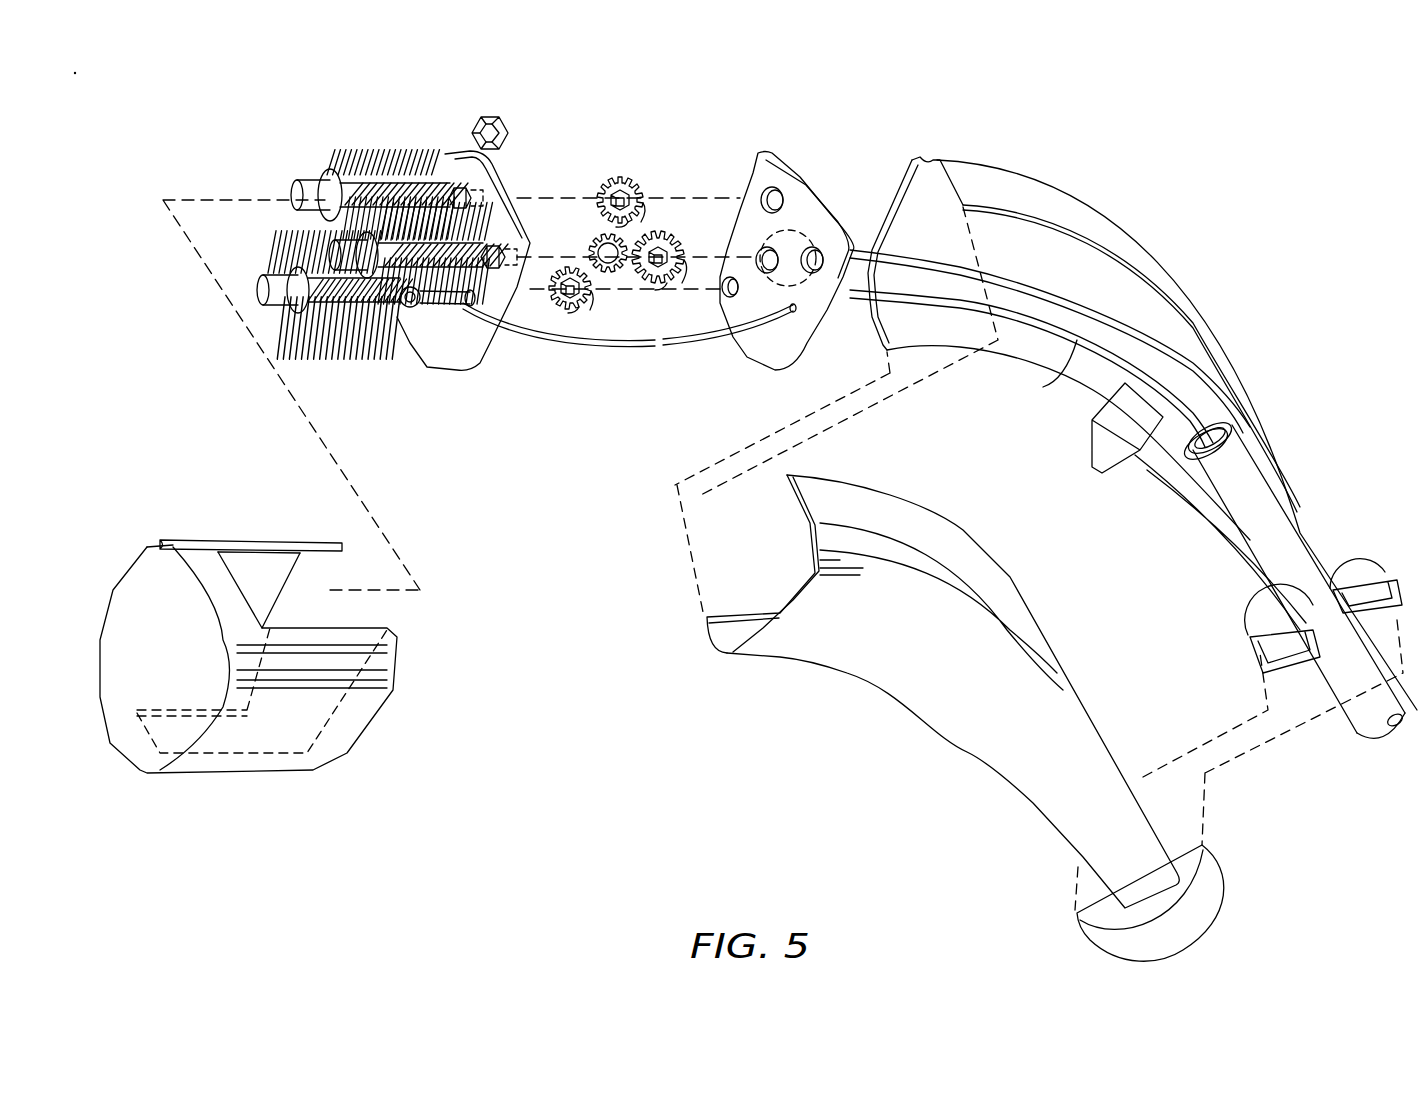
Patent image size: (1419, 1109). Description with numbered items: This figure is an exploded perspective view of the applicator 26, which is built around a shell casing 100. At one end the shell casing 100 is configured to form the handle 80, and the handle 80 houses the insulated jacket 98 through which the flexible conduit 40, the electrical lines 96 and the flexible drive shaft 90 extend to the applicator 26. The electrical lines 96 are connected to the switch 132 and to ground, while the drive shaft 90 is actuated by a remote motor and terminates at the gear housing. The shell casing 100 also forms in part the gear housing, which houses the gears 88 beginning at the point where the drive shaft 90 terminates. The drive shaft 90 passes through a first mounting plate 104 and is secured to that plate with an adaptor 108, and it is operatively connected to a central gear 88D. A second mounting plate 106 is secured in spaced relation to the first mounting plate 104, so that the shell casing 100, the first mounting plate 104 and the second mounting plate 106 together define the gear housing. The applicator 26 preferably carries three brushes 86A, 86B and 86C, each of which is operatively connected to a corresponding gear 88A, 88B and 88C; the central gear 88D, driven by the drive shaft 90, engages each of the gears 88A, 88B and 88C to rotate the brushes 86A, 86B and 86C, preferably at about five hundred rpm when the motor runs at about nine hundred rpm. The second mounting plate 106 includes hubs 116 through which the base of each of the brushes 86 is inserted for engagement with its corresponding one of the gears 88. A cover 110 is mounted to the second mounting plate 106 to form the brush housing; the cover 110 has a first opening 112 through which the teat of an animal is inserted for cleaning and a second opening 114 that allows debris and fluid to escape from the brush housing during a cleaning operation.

The applicator 26 is at (1277, 181).
The flexible conduit 40 is at (1043, 387).
The handle 80 is at (1287, 488).
The brushes 86 is at (358, 133).
The first brush 86A is at (326, 165).
The second brush 86B is at (470, 355).
The third brush 86C is at (295, 245).
The gears 88 is at (640, 146).
The first gear 88A is at (618, 160).
The second gear 88B is at (653, 295).
The third gear 88C is at (569, 325).
The central gear 88D is at (593, 237).
The flexible drive shaft 90 is at (1143, 348).
The electrical lines 96 is at (1173, 440).
The insulated jacket 98 is at (1350, 718).
The shell casing 100 is at (1103, 210).
The first mounting plate 104 is at (753, 367).
The second mounting plate 106 is at (447, 367).
The adaptor 108 is at (782, 245).
The cover 110 is at (181, 670).
The first opening 112 is at (262, 570).
The second opening 114 is at (231, 742).
The hubs 116 is at (470, 140).
The switch 132 is at (1120, 428).